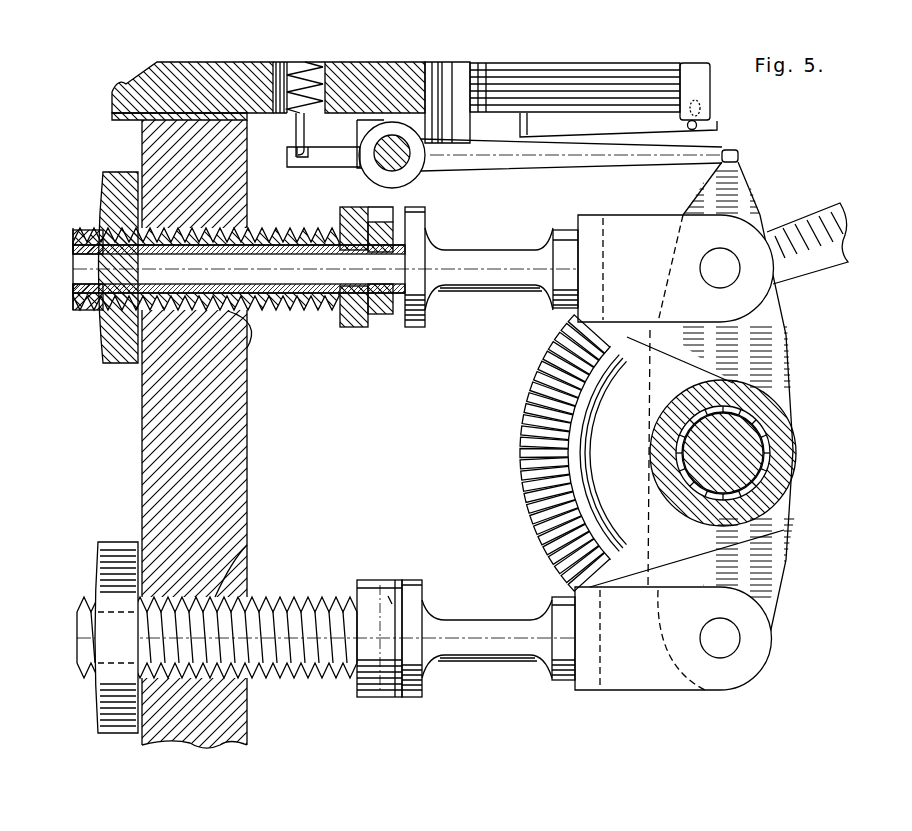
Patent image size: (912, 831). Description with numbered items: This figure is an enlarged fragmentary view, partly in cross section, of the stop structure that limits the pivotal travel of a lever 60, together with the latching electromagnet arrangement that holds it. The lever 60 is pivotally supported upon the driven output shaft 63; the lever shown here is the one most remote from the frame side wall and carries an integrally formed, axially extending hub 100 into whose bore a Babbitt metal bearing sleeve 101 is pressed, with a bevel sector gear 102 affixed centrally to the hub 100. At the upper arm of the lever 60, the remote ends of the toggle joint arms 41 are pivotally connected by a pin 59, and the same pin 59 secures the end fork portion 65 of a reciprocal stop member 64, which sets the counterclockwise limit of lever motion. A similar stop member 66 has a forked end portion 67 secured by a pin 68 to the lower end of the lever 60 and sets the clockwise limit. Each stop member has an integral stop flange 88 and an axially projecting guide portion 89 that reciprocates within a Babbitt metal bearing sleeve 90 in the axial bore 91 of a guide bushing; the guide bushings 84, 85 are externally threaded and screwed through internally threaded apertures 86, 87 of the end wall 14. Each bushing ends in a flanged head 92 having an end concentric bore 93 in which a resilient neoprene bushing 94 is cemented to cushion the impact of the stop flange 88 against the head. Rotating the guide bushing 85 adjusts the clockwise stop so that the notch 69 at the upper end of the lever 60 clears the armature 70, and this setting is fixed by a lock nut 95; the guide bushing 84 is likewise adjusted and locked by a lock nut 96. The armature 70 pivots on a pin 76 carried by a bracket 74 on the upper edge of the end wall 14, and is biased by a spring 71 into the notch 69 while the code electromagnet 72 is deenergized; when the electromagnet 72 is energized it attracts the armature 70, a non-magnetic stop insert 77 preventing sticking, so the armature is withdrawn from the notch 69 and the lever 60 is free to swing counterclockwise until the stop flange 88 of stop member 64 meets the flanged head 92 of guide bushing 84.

The end wall 14 is at (245, 446).
The toggle joint arm 41 is at (815, 226).
The pin 59 is at (735, 270).
The lever 60 is at (780, 346).
The driven output shaft 63 is at (750, 440).
The stop member 64 is at (492, 285).
The end fork portion 65 is at (650, 215).
The stop member 66 is at (478, 652).
The forked end portion 67 is at (655, 690).
The pin 68 is at (732, 640).
The notch 69 is at (740, 156).
The armature 70 is at (560, 160).
The spring 71 is at (301, 62).
The code electromagnet 72 is at (632, 78).
The bracket 74 is at (179, 68).
The pin 76 is at (404, 162).
The non-magnetic stop insert 77 is at (703, 126).
The guide bushing 84 is at (316, 318).
The guide bushing 85 is at (278, 598).
The internally threaded aperture 86 is at (250, 332).
The internally threaded aperture 87 is at (250, 538).
The stop flange 88 is at (420, 327).
The guide portion 89 is at (273, 257).
The Babbitt metal bearing sleeve 90 is at (86, 310).
The axial bore 91 is at (93, 228).
The flanged head 92 is at (352, 330).
The end concentric bore 93 is at (378, 328).
The bushing 94 is at (368, 207).
The lock nut 95 is at (115, 735).
The lock nut 96 is at (113, 365).
The hub 100 is at (790, 412).
The Babbitt metal bearing sleeve 101 is at (762, 468).
The bevel sector gear 102 is at (528, 448).